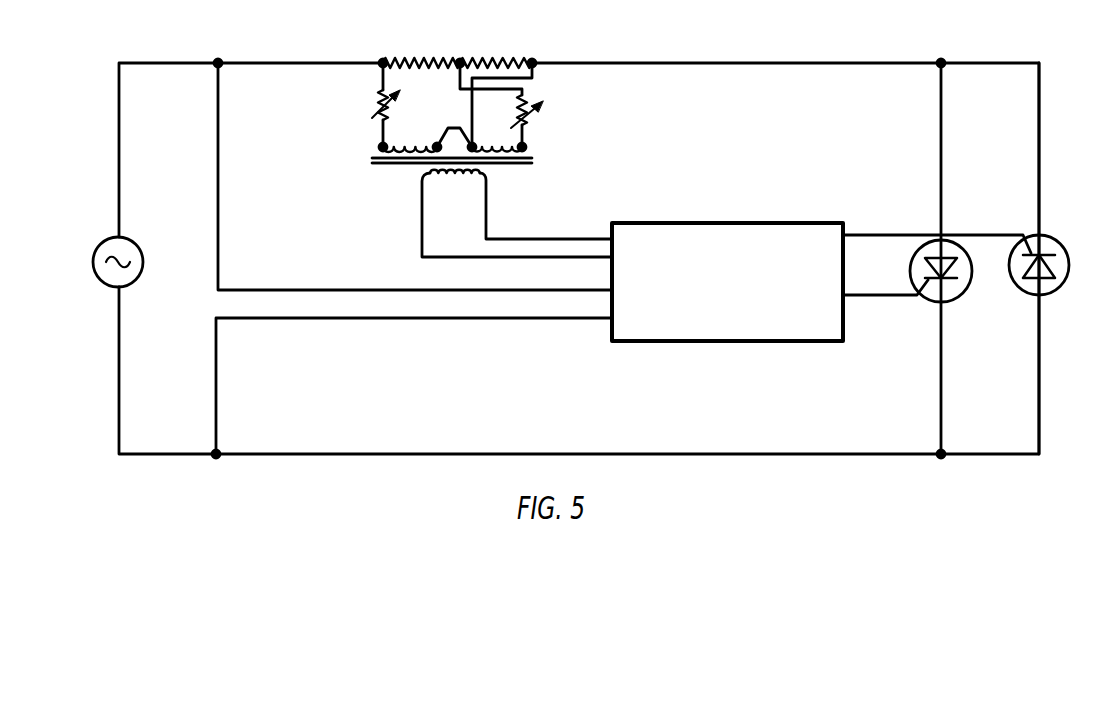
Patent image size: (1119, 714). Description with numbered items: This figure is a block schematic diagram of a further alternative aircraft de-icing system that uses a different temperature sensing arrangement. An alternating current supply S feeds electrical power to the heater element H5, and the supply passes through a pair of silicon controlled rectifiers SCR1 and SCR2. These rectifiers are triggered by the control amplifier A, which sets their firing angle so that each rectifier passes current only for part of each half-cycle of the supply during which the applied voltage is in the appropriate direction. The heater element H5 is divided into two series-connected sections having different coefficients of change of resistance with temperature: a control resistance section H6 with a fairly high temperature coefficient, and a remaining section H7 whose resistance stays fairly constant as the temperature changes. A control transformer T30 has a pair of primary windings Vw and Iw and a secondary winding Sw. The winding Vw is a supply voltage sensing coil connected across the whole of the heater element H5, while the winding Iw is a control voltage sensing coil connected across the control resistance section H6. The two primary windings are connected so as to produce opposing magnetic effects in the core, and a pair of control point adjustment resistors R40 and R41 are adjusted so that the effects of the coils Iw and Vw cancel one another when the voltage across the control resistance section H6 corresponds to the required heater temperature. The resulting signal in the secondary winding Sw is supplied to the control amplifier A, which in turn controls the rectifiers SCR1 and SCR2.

The AC power source S is at (97, 274).
The remaining section H7 is at (405, 56).
The control resistance section H6 is at (477, 57).
The heater element H5 is at (523, 55).
The control point adjustment resistor R40 is at (378, 93).
The control point adjustment resistor R41 is at (536, 110).
The supply voltage sensing coil Vw is at (381, 134).
The control voltage sensing coil Iw is at (528, 134).
The secondary winding Sw is at (517, 213).
The control transformer T30 is at (507, 165).
The control amplifier A is at (828, 310).
The silicon controlled rectifier SCR1 is at (957, 282).
The silicon controlled rectifier SCR2 is at (1055, 275).